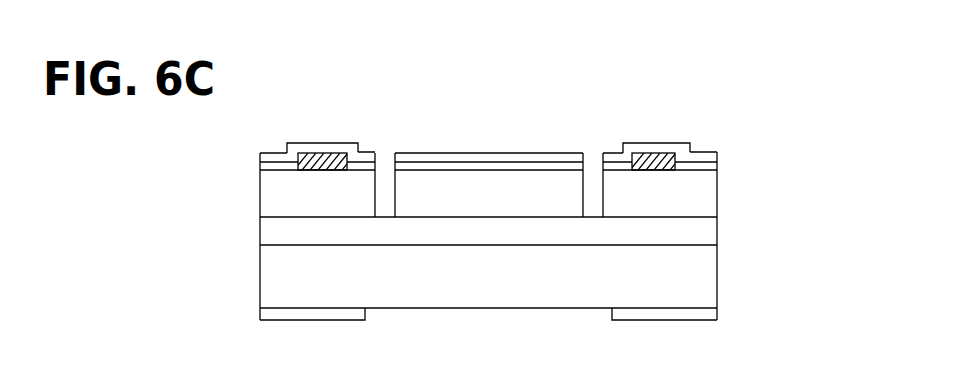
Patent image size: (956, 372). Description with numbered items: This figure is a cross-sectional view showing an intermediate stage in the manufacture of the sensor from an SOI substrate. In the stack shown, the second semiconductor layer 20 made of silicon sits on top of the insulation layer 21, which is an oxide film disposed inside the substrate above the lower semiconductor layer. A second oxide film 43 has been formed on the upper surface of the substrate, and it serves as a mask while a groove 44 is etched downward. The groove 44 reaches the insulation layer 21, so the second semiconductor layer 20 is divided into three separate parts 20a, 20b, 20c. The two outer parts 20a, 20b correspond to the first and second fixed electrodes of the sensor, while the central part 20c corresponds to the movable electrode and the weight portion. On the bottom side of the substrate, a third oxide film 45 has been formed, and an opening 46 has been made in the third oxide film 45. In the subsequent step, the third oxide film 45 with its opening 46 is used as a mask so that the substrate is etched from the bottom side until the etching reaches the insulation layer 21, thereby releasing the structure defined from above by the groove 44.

The second semiconductor layer 20 is at (703, 190).
The first part of second semiconductor layer 20a is at (352, 185).
The second part of second semiconductor layer 20b is at (627, 187).
The third part of second semiconductor layer 20c is at (500, 187).
The insulation layer 21 is at (705, 233).
The second oxide film 43 is at (705, 152).
The groove 44 is at (376, 195).
The third oxide film 45 is at (717, 315).
The opening 46 is at (367, 313).